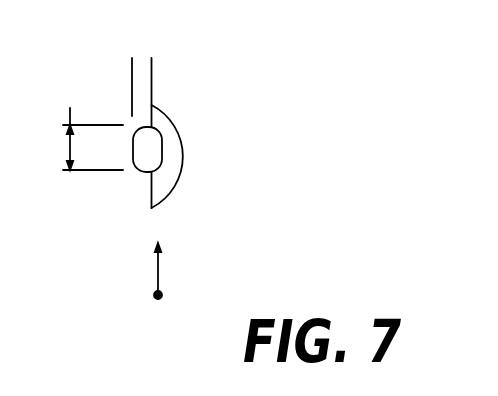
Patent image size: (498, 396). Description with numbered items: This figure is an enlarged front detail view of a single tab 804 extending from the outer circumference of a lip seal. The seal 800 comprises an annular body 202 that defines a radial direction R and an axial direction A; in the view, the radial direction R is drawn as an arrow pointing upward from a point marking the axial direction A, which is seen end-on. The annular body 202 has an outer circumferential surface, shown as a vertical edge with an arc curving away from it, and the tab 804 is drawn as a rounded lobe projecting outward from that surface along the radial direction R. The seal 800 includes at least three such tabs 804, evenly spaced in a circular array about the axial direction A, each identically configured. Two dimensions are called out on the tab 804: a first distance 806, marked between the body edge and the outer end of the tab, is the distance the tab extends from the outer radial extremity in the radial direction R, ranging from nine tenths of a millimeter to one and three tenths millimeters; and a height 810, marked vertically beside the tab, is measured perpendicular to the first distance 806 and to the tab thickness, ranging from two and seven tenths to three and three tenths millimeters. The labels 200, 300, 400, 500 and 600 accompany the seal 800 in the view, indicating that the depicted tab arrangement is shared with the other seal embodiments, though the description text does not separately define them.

The implant assembly 200 is at (182, 55).
The anchor assembly 300 is at (220, 68).
The alternative assembly 400 is at (260, 78).
The alternative assembly 500 is at (272, 119).
The alternative assembly 600 is at (272, 119).
The seal 800 is at (272, 119).
The annular body 202 is at (183, 107).
The tab 804 is at (149, 148).
The first distance 806 is at (188, 66).
The height 810 is at (70, 125).
The radial direction R is at (157, 254).
The axial direction A is at (162, 293).